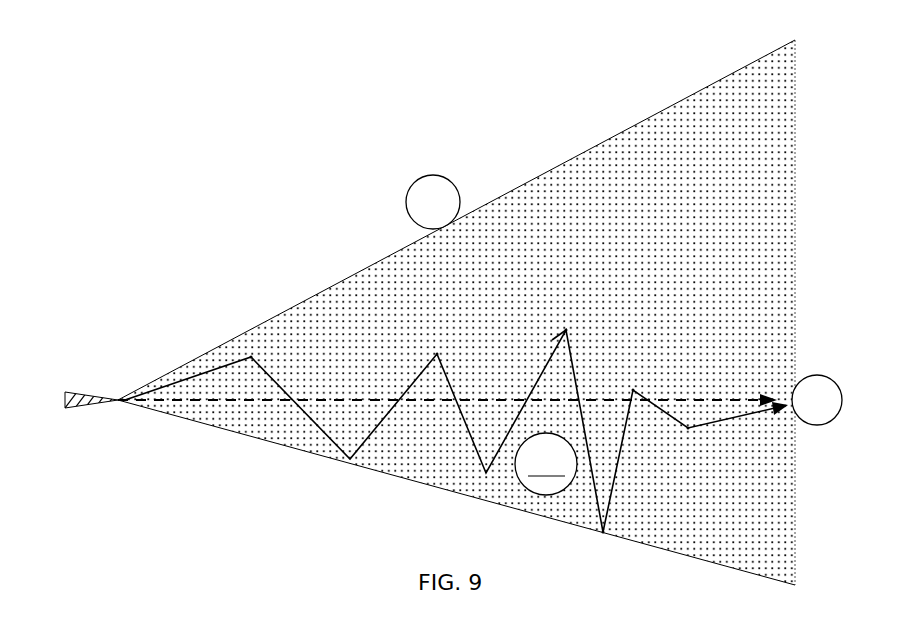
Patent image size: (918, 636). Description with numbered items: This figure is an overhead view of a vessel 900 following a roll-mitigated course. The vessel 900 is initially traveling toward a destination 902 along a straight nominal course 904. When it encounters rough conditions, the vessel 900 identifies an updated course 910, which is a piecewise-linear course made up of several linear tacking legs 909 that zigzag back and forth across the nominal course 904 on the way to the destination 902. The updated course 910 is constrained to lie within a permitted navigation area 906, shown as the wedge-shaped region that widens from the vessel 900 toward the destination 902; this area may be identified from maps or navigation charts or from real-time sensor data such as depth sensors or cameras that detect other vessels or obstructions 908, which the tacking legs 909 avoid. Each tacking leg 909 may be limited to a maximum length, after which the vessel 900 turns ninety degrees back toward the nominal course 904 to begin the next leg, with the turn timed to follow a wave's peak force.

The vessel 900 is at (78, 393).
The destination 902 is at (832, 383).
The nominal course 904 is at (344, 395).
The permitted navigation area 906 is at (697, 227).
The obstruction 908 is at (414, 185).
The tacking leg 909 is at (264, 392).
The updated course 910 is at (544, 322).